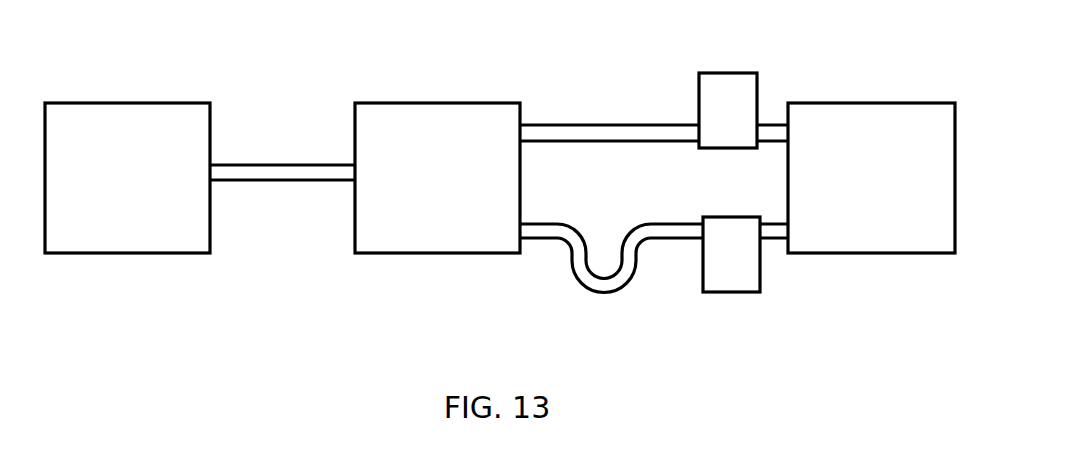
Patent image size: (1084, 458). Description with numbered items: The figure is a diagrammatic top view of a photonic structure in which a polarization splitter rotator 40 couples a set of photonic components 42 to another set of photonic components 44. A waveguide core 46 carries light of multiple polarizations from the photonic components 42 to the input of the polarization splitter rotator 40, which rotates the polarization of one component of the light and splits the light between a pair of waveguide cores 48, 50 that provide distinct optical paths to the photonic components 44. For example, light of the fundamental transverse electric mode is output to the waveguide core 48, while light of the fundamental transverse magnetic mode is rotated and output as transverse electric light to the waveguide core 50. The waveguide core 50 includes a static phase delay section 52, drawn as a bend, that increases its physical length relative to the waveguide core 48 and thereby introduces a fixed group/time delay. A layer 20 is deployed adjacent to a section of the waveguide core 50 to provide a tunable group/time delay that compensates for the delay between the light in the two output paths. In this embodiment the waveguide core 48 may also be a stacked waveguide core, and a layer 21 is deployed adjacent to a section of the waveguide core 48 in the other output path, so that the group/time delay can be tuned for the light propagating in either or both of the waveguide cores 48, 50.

The layer 20 is at (737, 275).
The layer 21 is at (712, 99).
The polarization splitter rotator 40 is at (420, 212).
The photonic components 42 is at (137, 212).
The photonic components 44 is at (862, 132).
The waveguide core 46 is at (290, 175).
The waveguide core 48 is at (565, 135).
The waveguide core 50 is at (641, 292).
The static phase delay section 52 is at (617, 307).